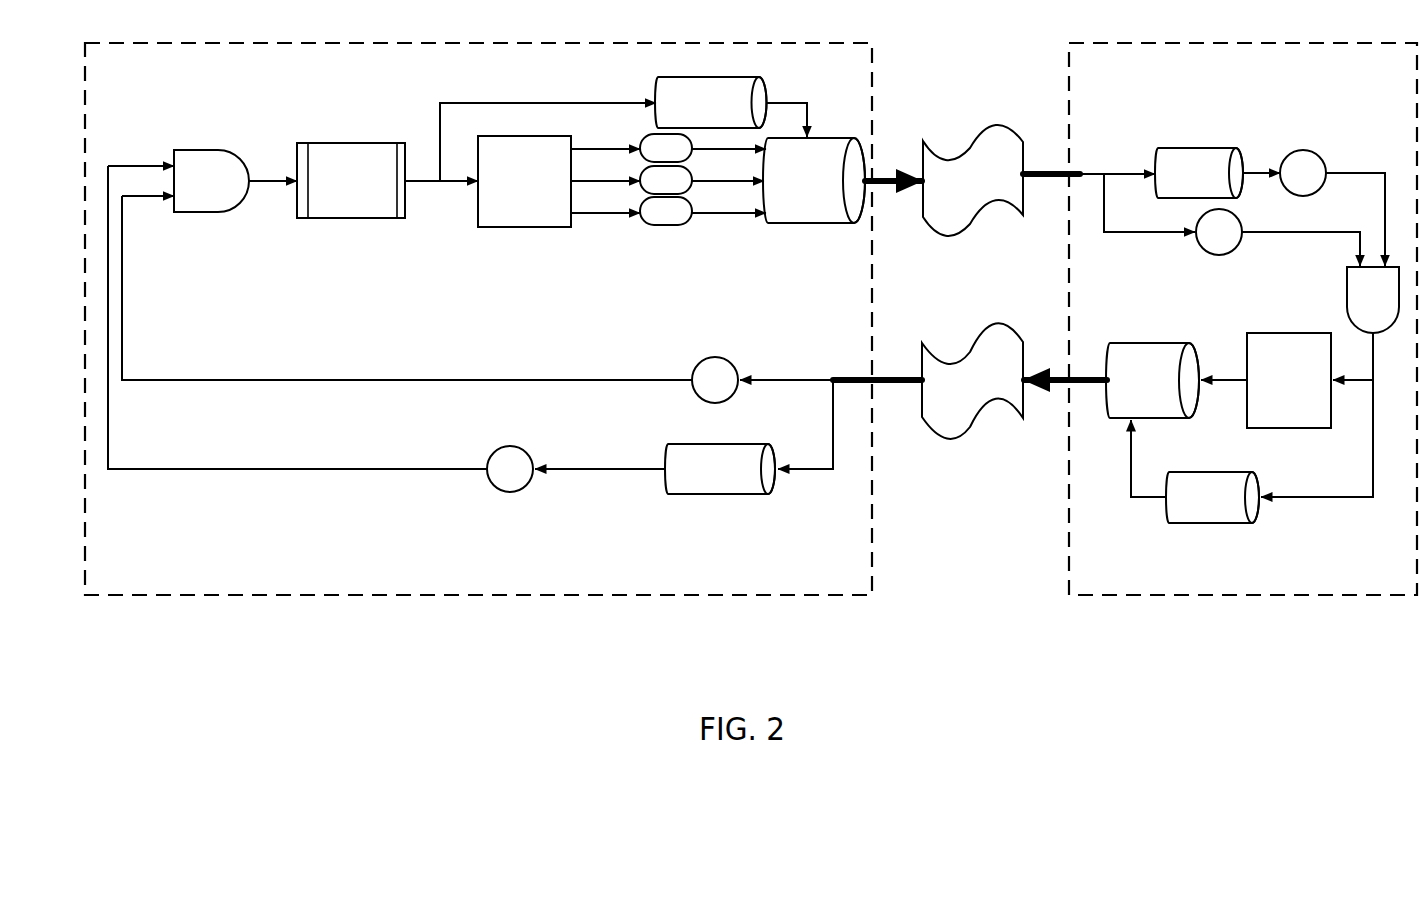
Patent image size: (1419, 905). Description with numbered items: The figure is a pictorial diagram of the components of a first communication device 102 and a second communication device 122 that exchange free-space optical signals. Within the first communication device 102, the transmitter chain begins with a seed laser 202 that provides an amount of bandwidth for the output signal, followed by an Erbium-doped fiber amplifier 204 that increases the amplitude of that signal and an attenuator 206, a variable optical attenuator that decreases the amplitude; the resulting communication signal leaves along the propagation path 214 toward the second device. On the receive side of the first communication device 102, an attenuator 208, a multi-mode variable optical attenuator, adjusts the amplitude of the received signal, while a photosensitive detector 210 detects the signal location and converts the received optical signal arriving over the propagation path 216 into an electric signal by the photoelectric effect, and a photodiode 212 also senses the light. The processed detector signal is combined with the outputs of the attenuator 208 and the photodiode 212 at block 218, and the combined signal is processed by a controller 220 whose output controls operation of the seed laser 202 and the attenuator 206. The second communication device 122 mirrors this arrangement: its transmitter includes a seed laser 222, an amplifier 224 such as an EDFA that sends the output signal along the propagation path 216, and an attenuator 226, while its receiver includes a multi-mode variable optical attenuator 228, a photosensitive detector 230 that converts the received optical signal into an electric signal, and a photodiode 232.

The first communication device 102 is at (103, 82).
The second communication device 122 is at (1097, 75).
The seed laser 202 is at (545, 193).
The Erbium-doped fiber amplifier 204 is at (821, 193).
The attenuator 206 is at (731, 114).
The attenuator 208 is at (739, 481).
The photosensitive detector 210 is at (693, 368).
The photodiode 212 is at (508, 491).
The propagation path 214 is at (967, 138).
The propagation path 216 is at (973, 417).
The block 218 is at (205, 213).
The controller 220 is at (353, 218).
The seed laser 222 is at (1310, 393).
The amplifier 224 is at (1168, 393).
The attenuator 226 is at (1230, 510).
The multi-mode variable optical attenuator 228 is at (1217, 185).
The photosensitive detector 230 is at (1198, 249).
The photodiode 232 is at (1307, 148).